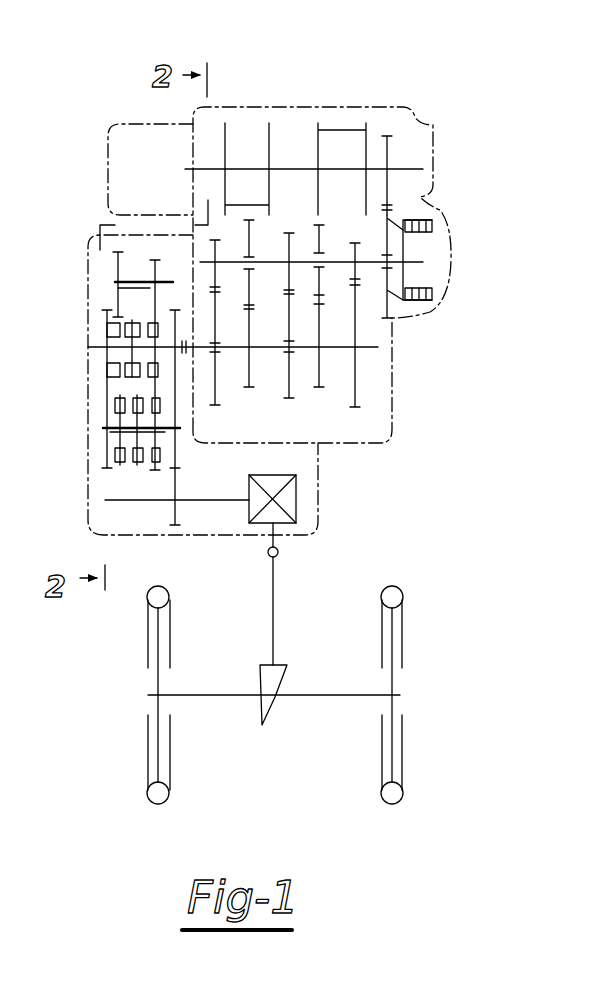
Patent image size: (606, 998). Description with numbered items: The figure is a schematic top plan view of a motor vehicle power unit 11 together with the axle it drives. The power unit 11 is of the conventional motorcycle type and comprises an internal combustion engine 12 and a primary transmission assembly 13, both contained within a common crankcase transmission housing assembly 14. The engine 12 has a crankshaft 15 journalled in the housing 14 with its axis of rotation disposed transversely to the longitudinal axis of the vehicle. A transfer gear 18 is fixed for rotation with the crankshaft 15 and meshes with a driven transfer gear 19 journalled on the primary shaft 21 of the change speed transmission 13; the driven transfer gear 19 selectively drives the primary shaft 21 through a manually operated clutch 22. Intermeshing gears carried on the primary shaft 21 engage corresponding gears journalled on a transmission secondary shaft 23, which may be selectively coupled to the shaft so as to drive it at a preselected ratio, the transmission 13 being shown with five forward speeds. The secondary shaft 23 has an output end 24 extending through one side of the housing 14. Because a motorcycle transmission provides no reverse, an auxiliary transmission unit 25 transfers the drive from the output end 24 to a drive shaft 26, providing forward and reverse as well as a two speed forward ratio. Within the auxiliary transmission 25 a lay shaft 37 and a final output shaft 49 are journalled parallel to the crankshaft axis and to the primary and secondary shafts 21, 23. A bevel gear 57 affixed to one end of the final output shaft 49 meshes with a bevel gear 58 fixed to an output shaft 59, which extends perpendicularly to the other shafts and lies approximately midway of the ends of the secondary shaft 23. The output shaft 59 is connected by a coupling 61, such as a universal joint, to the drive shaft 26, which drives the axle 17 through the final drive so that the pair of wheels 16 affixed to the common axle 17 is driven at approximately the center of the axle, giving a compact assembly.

The power unit 11 is at (372, 105).
The internal combustion engine 12 is at (415, 117).
The primary transmission assembly 13 is at (330, 392).
The crankcase transmission housing assembly 14 is at (403, 385).
The crankshaft 15 is at (292, 167).
The wheels 16 is at (156, 675).
The axle 17 is at (326, 692).
The transfer gear 18 is at (388, 152).
The driven transfer gear 19 is at (388, 215).
The primary shaft 21 is at (423, 262).
The manually operated clutch 22 is at (425, 213).
The transmission secondary shaft 23 is at (202, 350).
The output end 24 is at (186, 345).
The auxiliary transmission unit 25 is at (101, 403).
The drive shaft 26 is at (278, 570).
The lay shaft 37 is at (100, 429).
The final output shaft 49 is at (110, 501).
The bevel gear 57 is at (283, 480).
The bevel gear 58 is at (272, 512).
The output shaft 59 is at (276, 540).
The coupling 61 is at (268, 558).